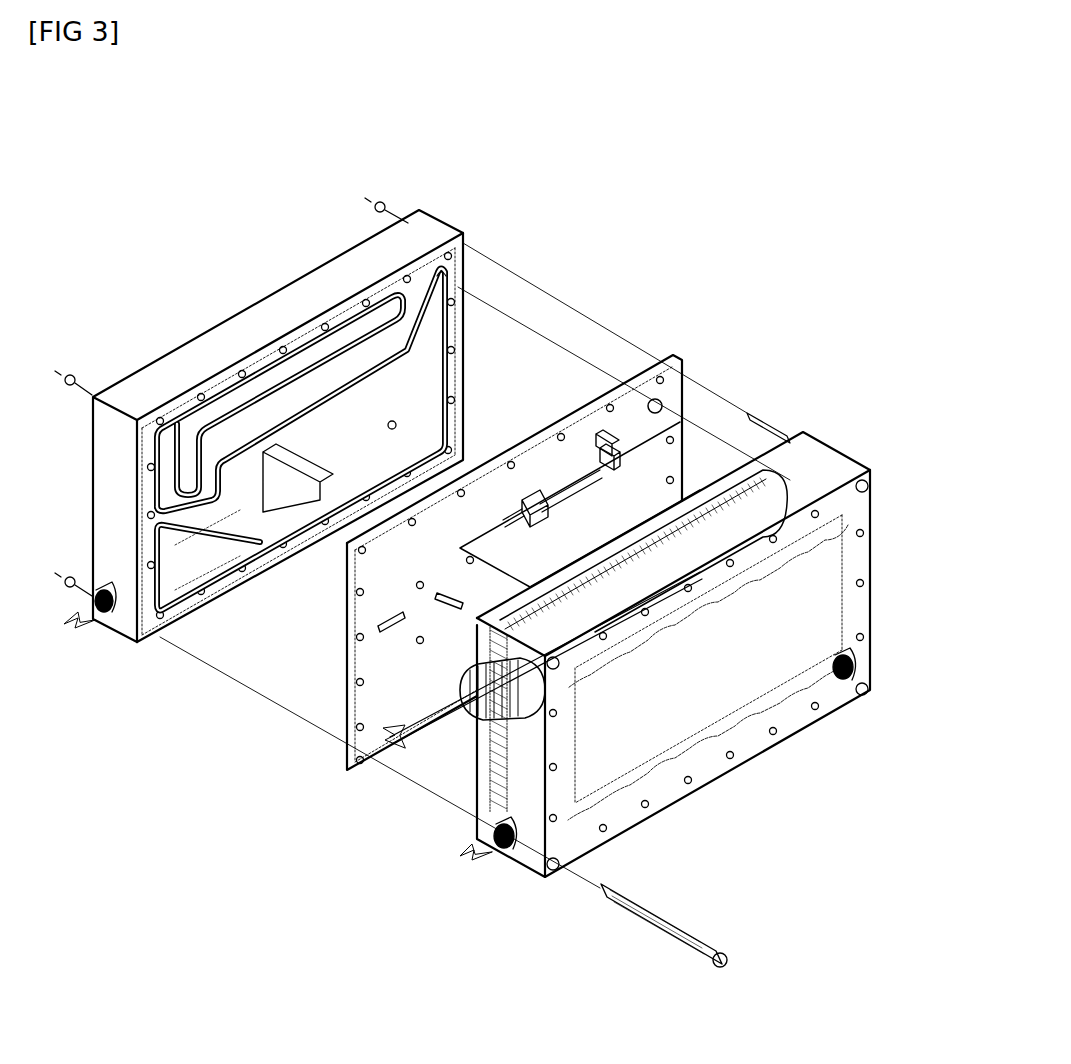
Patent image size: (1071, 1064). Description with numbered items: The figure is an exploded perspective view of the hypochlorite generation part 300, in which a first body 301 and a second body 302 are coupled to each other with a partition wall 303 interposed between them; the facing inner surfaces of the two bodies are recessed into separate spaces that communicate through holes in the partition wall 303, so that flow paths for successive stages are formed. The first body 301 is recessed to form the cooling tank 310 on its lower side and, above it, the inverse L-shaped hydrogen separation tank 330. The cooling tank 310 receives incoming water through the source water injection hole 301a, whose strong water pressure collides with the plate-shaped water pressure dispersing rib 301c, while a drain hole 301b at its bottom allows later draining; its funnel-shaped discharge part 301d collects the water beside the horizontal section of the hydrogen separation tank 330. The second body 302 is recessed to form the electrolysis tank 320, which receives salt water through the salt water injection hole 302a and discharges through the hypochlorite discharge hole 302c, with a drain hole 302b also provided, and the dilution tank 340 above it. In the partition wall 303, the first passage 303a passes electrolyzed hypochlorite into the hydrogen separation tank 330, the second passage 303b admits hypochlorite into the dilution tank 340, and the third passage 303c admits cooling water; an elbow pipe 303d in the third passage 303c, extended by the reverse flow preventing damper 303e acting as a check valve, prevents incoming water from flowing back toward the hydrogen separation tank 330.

The hypochlorite generation part 300 is at (860, 163).
The first body 301 is at (428, 217).
The source water injection hole 301a is at (183, 487).
The drain hole 301b is at (106, 615).
The water pressure dispersing rib 301c is at (396, 425).
The discharge part 301d is at (452, 270).
The second body 302 is at (833, 455).
The salt water injection hole 302a is at (862, 668).
The drain hole 302b is at (497, 860).
The hypochlorite discharge hole 302c is at (462, 706).
The partition wall 303 is at (680, 350).
The first passage 303a is at (383, 634).
The second passage 303b is at (652, 398).
The third passage 303c is at (600, 430).
The elbow pipe 303d is at (618, 470).
The reverse flow preventing damper 303e is at (531, 520).
The cooling tank 310 is at (192, 538).
The electrolysis tank 320 is at (850, 598).
The hydrogen separation tank 330 is at (265, 388).
The dilution tank 340 is at (863, 515).